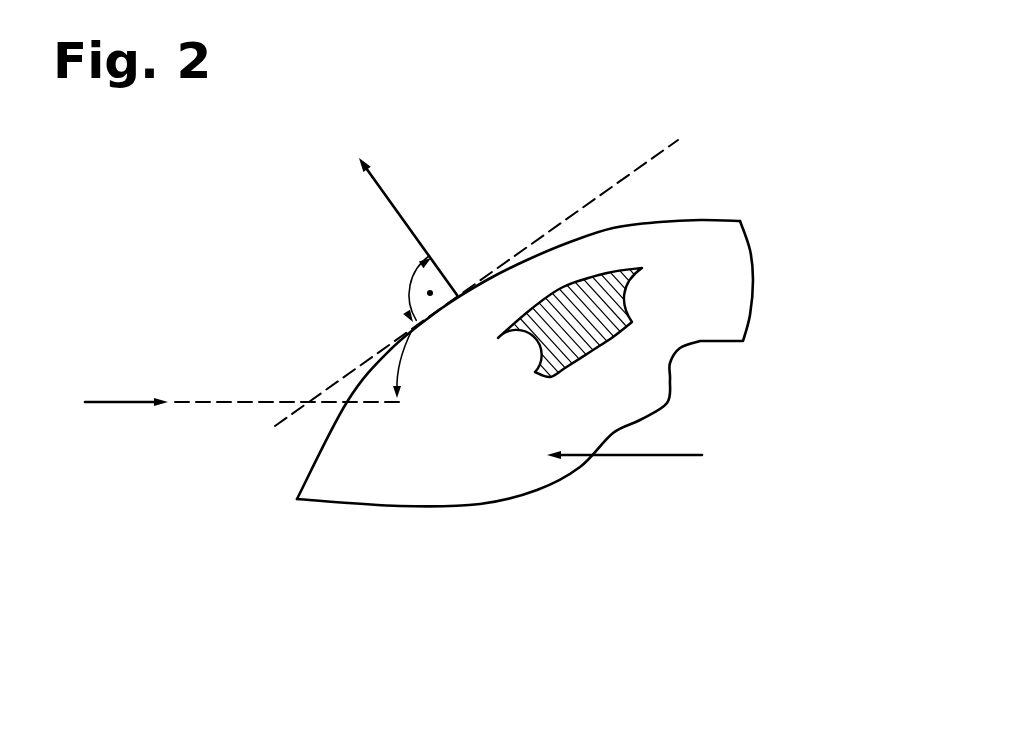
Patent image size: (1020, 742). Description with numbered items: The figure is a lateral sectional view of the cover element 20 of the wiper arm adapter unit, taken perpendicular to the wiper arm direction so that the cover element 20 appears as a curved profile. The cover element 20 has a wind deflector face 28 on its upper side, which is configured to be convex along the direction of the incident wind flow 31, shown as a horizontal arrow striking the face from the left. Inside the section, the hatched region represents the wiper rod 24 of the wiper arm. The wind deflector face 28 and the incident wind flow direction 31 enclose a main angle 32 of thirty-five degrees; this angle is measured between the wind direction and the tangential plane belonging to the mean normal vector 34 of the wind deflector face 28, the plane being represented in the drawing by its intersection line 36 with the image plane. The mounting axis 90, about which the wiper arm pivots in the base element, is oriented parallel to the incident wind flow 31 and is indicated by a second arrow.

The cover element 20 is at (792, 193).
The wiper rod 24 is at (610, 303).
The wind deflector face 28 is at (707, 219).
The direction of an incident flow of wind 31 is at (115, 402).
The main angle 32 is at (400, 348).
The mean normal vector 34 is at (398, 213).
The intersection line 36 is at (648, 163).
The mounting axis 90 is at (663, 455).